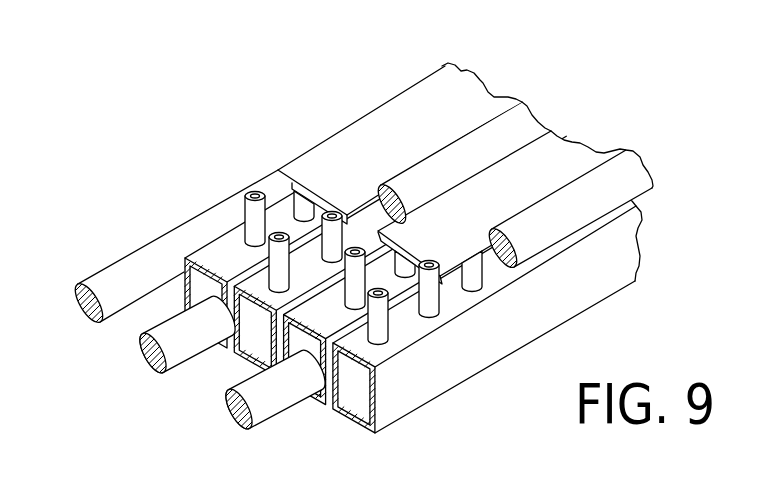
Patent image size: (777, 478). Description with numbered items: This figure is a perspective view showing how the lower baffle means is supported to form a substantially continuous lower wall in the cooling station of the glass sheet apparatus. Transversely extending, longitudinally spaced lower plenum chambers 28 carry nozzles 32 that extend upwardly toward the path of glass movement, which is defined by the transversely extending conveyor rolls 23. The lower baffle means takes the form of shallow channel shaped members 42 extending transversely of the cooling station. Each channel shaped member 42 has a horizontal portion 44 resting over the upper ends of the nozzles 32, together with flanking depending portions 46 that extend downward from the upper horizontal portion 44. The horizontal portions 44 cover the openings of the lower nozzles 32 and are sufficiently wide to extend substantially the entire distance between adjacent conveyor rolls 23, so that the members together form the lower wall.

The conveyor rolls 23 is at (93, 280).
The lower plenum chambers 28 is at (410, 388).
The nozzles 32 is at (388, 317).
The channel shaped members 42 is at (483, 82).
The horizontal portions 44 is at (377, 145).
The depending portions 46 is at (262, 174).